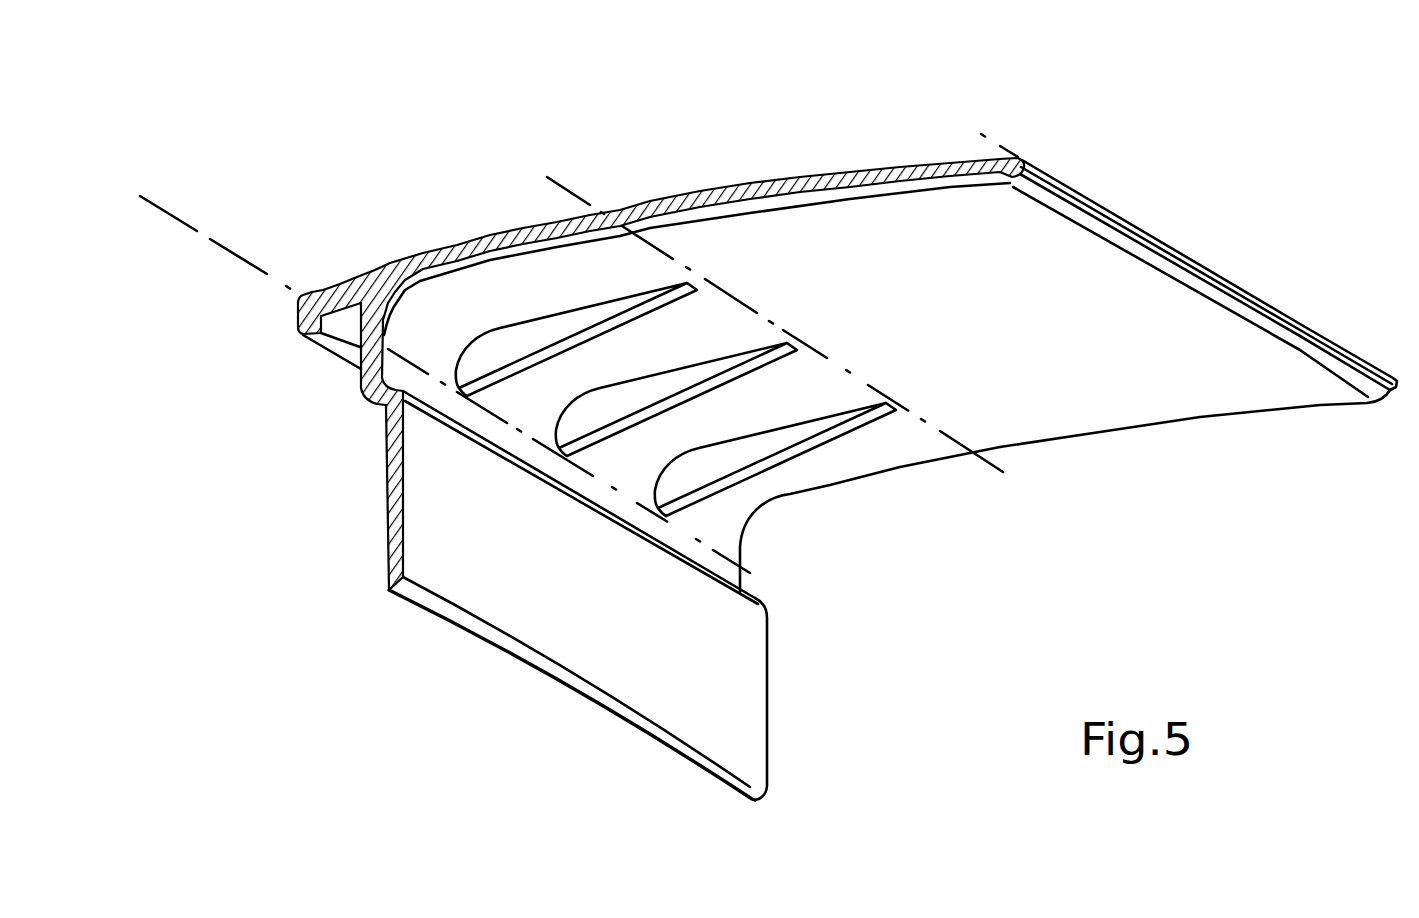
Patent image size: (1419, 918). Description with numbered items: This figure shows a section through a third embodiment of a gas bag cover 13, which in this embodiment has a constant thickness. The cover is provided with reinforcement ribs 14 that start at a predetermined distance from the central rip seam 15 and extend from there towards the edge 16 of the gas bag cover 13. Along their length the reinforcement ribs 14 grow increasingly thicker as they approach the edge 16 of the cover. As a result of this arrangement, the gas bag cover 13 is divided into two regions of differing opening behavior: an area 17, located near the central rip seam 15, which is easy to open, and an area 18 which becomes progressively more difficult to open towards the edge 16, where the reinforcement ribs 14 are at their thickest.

The gas bag cover 13 is at (1143, 380).
The reinforcement ribs 14 is at (540, 330).
The central rip seam 15 is at (1097, 200).
The edge 16 is at (297, 318).
The area which is easy to open 17 is at (970, 127).
The area which becomes more difficult to open 18 is at (527, 170).